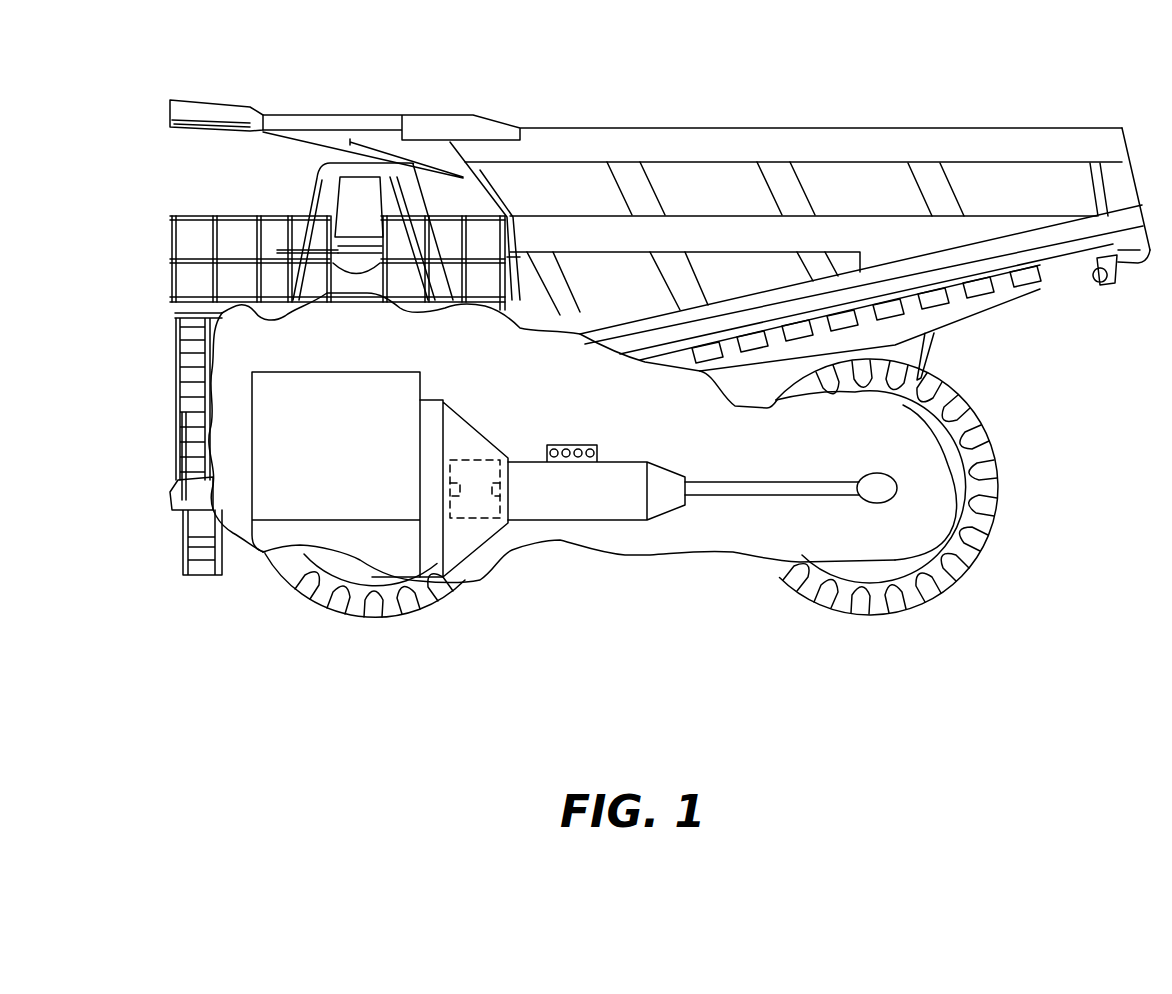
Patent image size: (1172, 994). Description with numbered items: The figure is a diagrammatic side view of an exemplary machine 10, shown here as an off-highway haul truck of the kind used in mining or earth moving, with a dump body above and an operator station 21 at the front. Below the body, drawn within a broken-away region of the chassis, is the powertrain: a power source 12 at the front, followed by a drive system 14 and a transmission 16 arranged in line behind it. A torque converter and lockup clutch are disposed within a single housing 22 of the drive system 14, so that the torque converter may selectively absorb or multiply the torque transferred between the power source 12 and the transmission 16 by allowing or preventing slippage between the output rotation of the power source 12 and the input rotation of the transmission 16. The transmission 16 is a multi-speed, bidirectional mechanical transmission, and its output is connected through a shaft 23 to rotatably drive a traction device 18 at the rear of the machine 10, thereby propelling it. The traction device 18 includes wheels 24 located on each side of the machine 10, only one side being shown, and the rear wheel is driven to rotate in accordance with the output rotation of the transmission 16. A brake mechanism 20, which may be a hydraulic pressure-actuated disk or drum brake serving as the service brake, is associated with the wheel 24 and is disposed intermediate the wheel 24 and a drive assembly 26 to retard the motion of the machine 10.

The machine 10 is at (752, 100).
The power source 12 is at (350, 464).
The drive system 14 is at (466, 448).
The transmission 16 is at (594, 500).
The traction device 18 is at (985, 414).
The brake mechanism 20 is at (950, 412).
The operator station 21 is at (357, 207).
The housing 22 is at (525, 547).
The shaft 23 is at (720, 497).
The wheels 24 is at (965, 548).
The drive assembly 26 is at (893, 476).